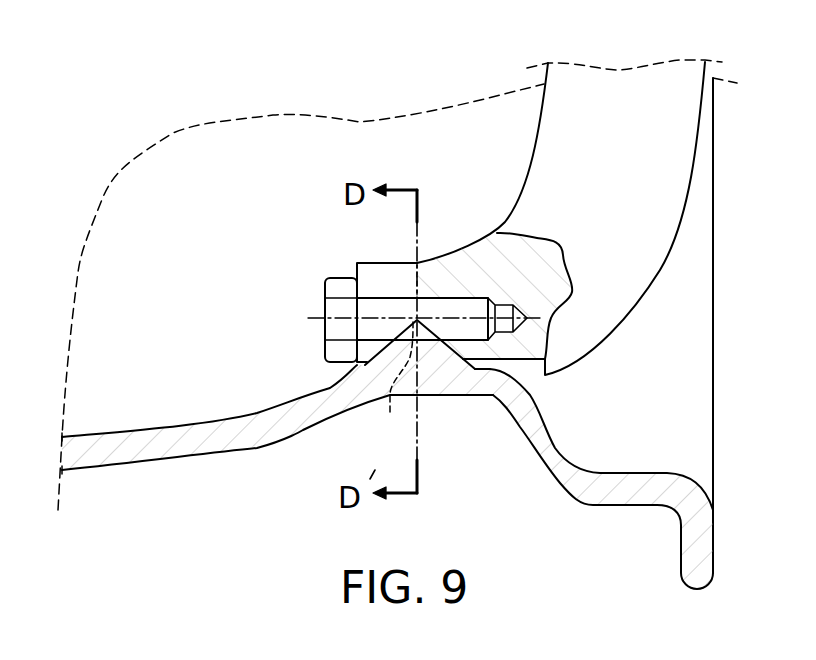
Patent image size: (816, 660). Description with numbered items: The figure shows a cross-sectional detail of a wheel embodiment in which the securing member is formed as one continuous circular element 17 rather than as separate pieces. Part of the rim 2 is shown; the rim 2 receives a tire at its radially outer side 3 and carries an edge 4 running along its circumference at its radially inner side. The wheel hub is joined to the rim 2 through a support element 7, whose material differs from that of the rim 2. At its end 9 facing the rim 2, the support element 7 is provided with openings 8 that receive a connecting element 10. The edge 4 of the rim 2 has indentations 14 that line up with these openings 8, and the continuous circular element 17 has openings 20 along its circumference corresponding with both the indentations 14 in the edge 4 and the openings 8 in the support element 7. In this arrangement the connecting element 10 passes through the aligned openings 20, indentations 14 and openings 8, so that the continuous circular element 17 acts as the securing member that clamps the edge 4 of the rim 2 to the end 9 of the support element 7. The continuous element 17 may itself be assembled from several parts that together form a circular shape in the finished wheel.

The rim 2 is at (332, 400).
The radially outer side 3 is at (309, 489).
The edge 4 is at (377, 368).
The support element 7 is at (598, 83).
The openings 8 is at (507, 307).
The end 9 is at (513, 352).
The connecting element 10 is at (350, 297).
The indentations 14 is at (395, 380).
The continuous circular element 17 is at (407, 280).
The openings 20 is at (375, 297).